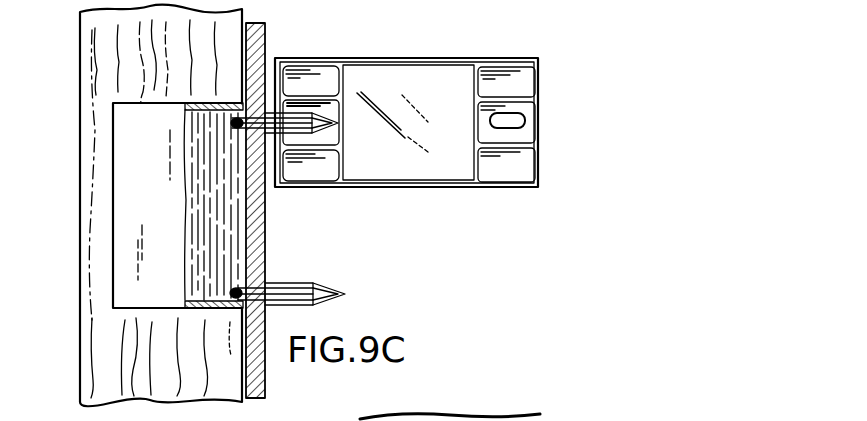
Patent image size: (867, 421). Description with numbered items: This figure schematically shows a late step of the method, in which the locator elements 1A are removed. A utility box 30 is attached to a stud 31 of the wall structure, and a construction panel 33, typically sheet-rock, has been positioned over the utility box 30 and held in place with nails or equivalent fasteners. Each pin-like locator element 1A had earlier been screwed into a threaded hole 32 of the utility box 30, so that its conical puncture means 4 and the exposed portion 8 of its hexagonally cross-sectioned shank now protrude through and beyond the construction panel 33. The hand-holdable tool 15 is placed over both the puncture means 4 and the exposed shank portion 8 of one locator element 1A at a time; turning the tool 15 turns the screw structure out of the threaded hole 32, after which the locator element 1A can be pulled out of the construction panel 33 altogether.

The stud 31 is at (100, 357).
The utility box 30 is at (161, 208).
The threaded hole 32 is at (263, 107).
The construction panel 33 is at (267, 47).
The tool 15 is at (466, 49).
The locator element 1A is at (289, 137).
The exposed shank portion 8 is at (309, 114).
The puncture means 4 is at (343, 295).